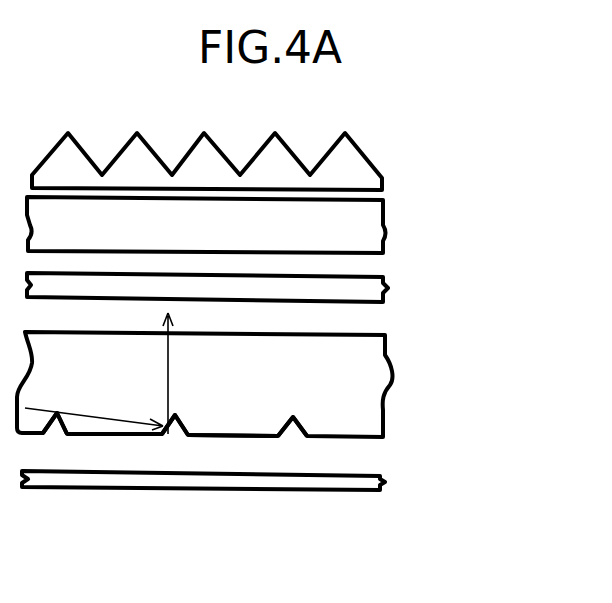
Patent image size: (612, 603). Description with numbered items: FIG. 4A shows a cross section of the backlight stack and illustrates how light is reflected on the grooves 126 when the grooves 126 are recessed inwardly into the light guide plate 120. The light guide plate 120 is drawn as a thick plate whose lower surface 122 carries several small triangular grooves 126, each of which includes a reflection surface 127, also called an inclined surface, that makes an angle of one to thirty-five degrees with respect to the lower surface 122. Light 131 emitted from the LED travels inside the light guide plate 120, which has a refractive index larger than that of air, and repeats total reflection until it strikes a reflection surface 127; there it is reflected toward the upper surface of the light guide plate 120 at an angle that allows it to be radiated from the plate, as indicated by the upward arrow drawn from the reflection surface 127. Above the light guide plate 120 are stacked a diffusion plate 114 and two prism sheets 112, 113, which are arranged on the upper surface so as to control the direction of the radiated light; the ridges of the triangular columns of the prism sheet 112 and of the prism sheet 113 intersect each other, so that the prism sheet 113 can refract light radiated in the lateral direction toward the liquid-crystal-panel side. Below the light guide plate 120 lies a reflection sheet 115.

The prism sheet 112 is at (383, 177).
The prism sheet 113 is at (384, 237).
The diffusion plate 114 is at (385, 292).
The light guide plate 120 is at (373, 383).
The reflection sheet 115 is at (382, 485).
The reflection surface 127 is at (163, 432).
The light 131 is at (110, 423).
The lower surface 122 is at (237, 437).
The groove 126 is at (292, 436).